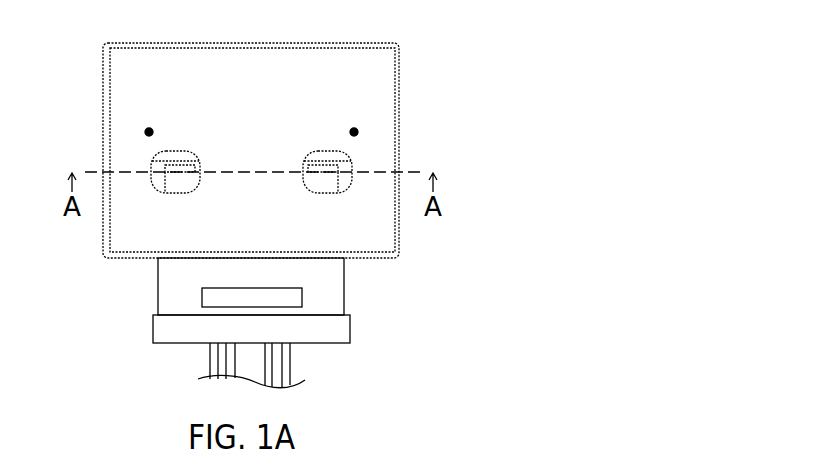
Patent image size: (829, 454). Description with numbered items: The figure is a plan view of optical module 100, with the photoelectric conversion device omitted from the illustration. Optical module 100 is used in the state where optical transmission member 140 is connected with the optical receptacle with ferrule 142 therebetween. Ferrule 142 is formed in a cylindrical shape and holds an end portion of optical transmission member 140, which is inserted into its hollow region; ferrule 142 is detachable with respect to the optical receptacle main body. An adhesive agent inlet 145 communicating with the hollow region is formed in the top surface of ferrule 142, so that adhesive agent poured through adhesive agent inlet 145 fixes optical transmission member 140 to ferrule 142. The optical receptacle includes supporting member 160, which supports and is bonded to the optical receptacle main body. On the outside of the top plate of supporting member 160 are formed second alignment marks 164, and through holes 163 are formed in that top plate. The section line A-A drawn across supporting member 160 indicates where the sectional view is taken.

The optical module 100 is at (423, 60).
The optical transmission member 140 is at (210, 347).
The ferrule 142 is at (178, 298).
The adhesive agent inlet 145 is at (293, 300).
The supporting member 160 is at (372, 228).
The through hole 163 is at (172, 182).
The second alignment mark 164 is at (145, 132).